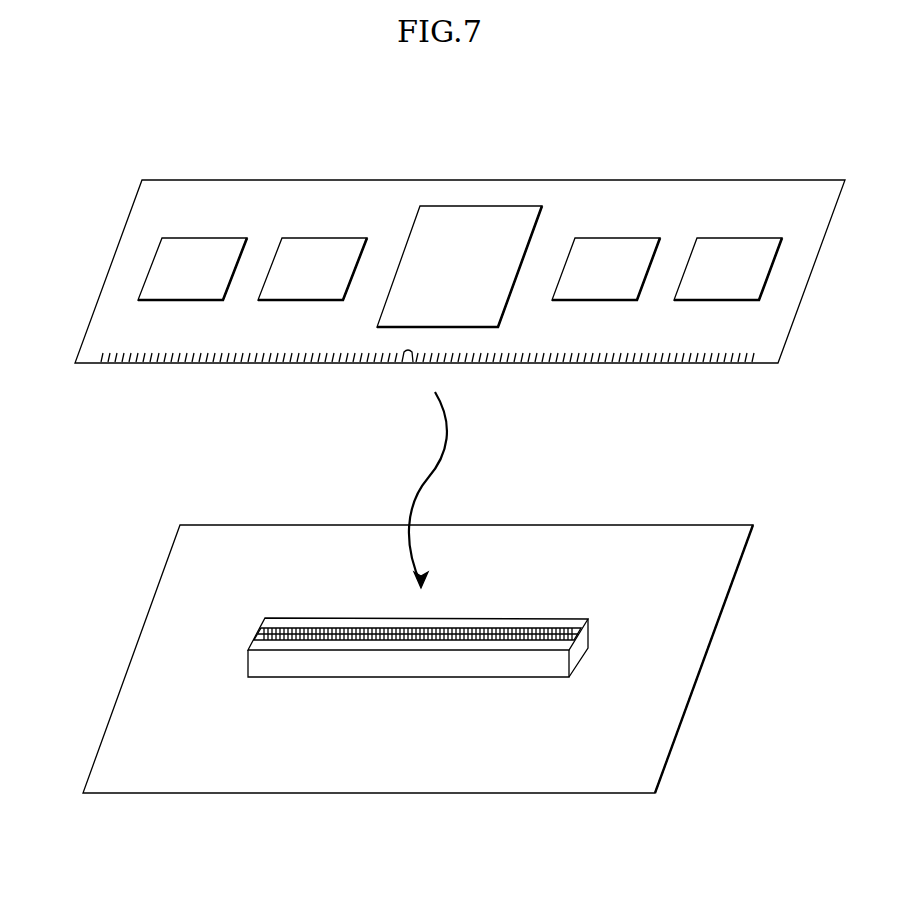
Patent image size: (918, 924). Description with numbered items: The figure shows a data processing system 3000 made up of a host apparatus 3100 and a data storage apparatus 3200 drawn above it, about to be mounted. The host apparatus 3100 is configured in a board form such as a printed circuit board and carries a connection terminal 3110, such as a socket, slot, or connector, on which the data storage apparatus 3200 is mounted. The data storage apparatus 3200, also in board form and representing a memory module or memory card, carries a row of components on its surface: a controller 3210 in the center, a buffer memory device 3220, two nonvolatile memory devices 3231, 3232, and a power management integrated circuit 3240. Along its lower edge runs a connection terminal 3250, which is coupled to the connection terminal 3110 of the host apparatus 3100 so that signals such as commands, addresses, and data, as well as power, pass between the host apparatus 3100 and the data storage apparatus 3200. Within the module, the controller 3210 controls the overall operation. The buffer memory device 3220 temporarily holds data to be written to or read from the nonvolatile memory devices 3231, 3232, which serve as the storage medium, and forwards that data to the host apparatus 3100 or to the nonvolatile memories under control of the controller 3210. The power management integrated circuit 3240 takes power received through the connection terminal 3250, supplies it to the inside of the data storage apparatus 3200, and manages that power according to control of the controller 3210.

The data processing system 3000 is at (117, 138).
The host apparatus 3100 is at (418, 659).
The connection terminal 3110 is at (613, 612).
The data storage apparatus 3200 is at (460, 296).
The controller 3210 is at (459, 266).
The buffer memory device 3220 is at (312, 269).
The nonvolatile memory device 3231 is at (606, 269).
The nonvolatile memory device 3232 is at (728, 269).
The power management integrated circuit 3240 is at (192, 269).
The connection terminal 3250 is at (125, 363).